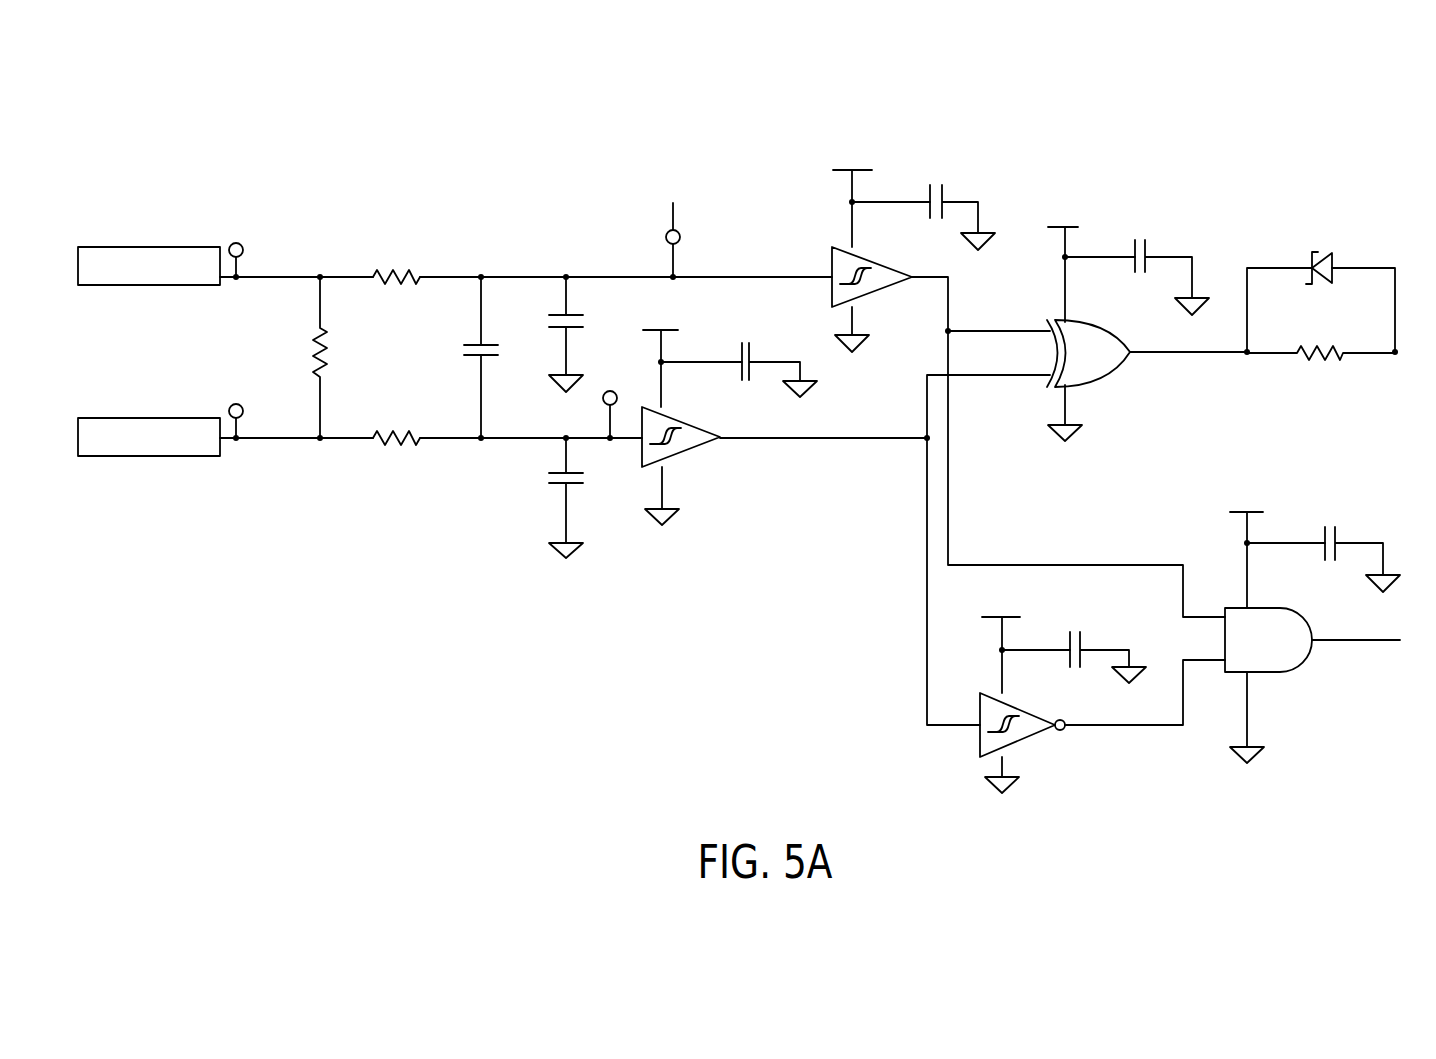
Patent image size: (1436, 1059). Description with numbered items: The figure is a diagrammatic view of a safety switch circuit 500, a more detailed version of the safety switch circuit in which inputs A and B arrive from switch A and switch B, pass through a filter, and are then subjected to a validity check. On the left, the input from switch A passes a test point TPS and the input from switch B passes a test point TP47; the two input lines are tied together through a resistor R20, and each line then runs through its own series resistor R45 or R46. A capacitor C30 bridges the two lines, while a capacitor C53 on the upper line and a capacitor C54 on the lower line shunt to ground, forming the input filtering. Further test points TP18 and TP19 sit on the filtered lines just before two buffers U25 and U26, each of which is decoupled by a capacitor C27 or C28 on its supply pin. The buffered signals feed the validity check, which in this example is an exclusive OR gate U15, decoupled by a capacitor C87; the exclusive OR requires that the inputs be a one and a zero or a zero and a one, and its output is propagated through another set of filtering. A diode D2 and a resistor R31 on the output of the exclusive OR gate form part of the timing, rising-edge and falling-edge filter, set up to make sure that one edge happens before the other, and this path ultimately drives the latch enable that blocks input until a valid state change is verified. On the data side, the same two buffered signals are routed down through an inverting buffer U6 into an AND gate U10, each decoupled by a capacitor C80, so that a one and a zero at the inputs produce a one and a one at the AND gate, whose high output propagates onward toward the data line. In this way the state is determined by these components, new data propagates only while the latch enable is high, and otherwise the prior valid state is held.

The safety switch circuit 500 is at (130, 127).
The resistor R45 is at (396, 274).
The resistor R46 is at (396, 436).
The resistor R20 is at (298, 357).
The resistor R31 is at (1321, 359).
The capacitor C30 is at (459, 357).
The capacitor C53 is at (546, 350).
The capacitor C54 is at (544, 515).
The capacitor C27 is at (768, 373).
The capacitor C28 is at (954, 209).
The capacitor C87 is at (1164, 272).
The capacitor C80 is at (1208, 598).
The Schmitt-trigger buffer U25 is at (775, 445).
The Schmitt-trigger buffer U26 is at (954, 447).
The XOR gate U15 is at (1144, 351).
The Schmitt-trigger inverter U6 is at (1087, 723).
The AND gate U10 is at (1323, 657).
The diode D2 is at (1321, 280).
The test point TPS is at (235, 241).
The test point TP47 is at (235, 402).
The test point TP18 is at (671, 225).
The test point TP19 is at (612, 393).